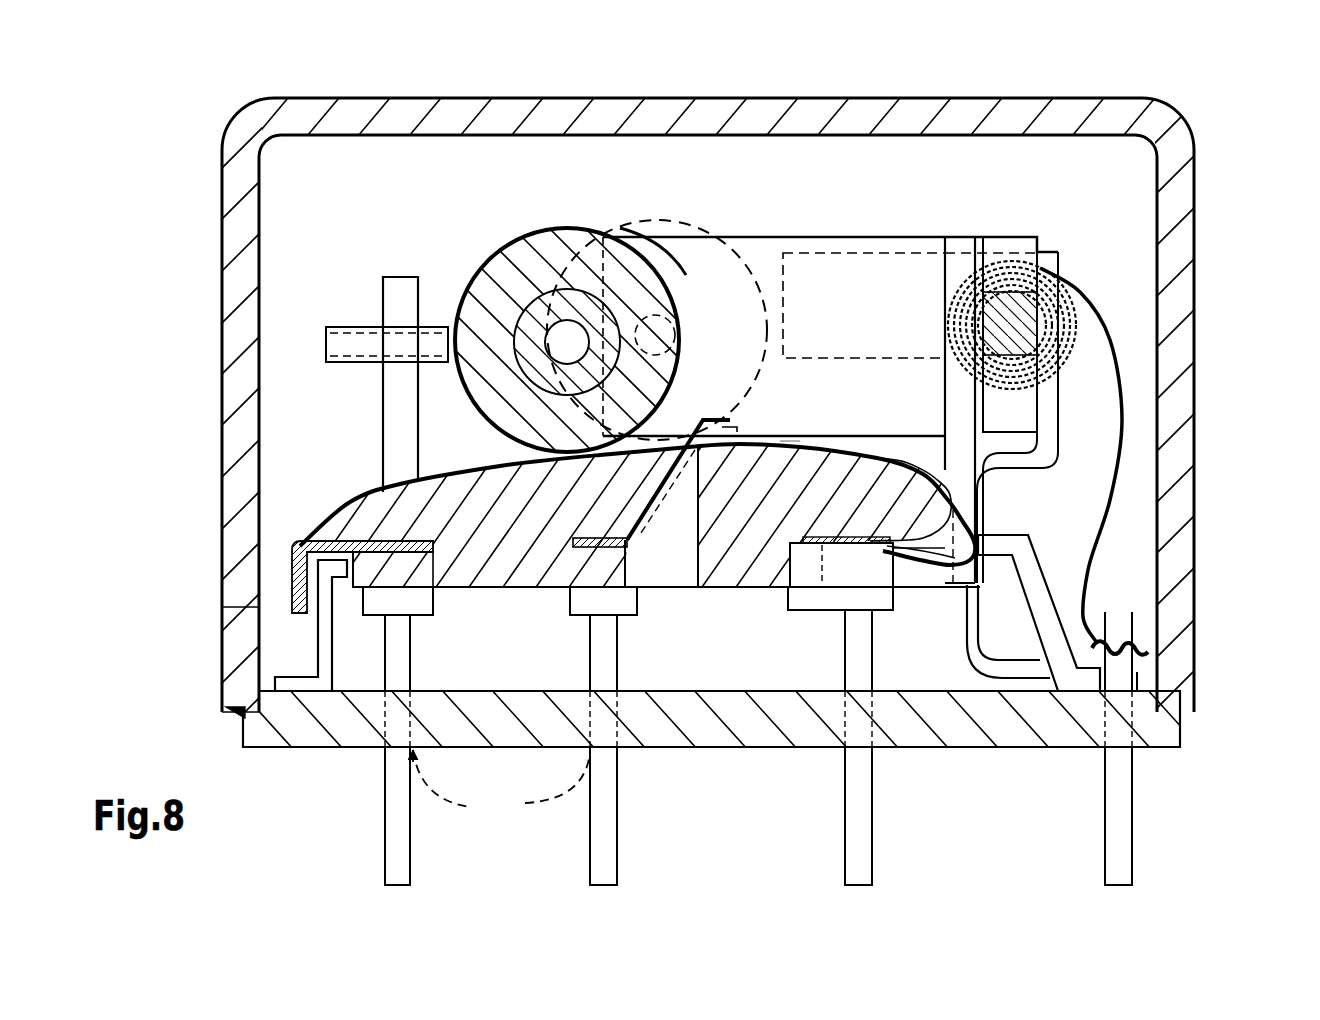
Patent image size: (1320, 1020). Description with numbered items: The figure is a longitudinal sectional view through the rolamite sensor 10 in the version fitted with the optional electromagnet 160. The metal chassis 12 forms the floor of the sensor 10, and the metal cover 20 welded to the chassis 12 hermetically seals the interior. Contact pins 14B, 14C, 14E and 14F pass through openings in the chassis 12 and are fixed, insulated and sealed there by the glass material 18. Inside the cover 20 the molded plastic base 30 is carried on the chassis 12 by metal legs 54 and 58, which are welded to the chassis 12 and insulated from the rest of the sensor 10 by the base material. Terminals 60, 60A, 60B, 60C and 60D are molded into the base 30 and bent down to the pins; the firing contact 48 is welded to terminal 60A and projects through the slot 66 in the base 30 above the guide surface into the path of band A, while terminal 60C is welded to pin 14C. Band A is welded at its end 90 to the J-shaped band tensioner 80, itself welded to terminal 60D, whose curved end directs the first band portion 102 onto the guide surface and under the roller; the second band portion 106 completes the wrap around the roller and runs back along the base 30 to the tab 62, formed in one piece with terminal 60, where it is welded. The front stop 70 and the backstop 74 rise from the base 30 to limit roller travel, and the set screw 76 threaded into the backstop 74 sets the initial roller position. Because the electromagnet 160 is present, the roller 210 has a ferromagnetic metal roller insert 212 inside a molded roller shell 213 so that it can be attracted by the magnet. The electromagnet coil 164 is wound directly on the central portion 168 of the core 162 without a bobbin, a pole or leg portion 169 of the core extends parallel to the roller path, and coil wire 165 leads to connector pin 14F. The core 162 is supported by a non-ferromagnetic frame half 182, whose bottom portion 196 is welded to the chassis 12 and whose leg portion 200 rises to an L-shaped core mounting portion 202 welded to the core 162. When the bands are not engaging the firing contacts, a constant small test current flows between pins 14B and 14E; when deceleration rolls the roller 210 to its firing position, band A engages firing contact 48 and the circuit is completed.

The rolamite sensor 10 is at (843, 76).
The metal chassis 12 is at (747, 717).
The contact pin 14B is at (397, 840).
The contact pin 14C is at (603, 848).
The contact pin 14E is at (862, 833).
The connector pin 14F is at (1130, 825).
The glass material 18 is at (501, 785).
The metal cover 20 is at (1196, 622).
The base 30 is at (730, 591).
The firing contact 48 is at (705, 405).
The metal leg 54 is at (1037, 598).
The metal leg 58 is at (294, 681).
The terminal 60 is at (566, 421).
The terminal 60A is at (573, 545).
The terminal 60B is at (417, 605).
The terminal 60C is at (582, 607).
The terminal 60D is at (800, 530).
The tab 62 is at (294, 607).
The slot 66 is at (655, 562).
The front stop 70 is at (957, 423).
The backstop 74 is at (380, 425).
The set screw 76 is at (343, 327).
The band tensioner 80 is at (837, 545).
The end of band A 90 is at (910, 558).
The first portion of band A 102 is at (980, 507).
The second band portion 106 is at (323, 527).
The electromagnet 160 is at (1119, 369).
The core 162 is at (911, 231).
The electromagnet coil 164 is at (1065, 292).
The wire 165 is at (1115, 512).
The central portion of core 168 is at (1015, 330).
The leg portion of core 169 is at (755, 238).
The frame half 182 is at (1006, 476).
The bottom portion of frame half 196 is at (1040, 683).
The leg portion of frame half 200 is at (963, 653).
The core mounting portion 202 is at (847, 253).
The roller 210 is at (550, 429).
The metal roller insert 212 is at (538, 318).
The roller shell 213 is at (503, 272).
The band A is at (797, 437).